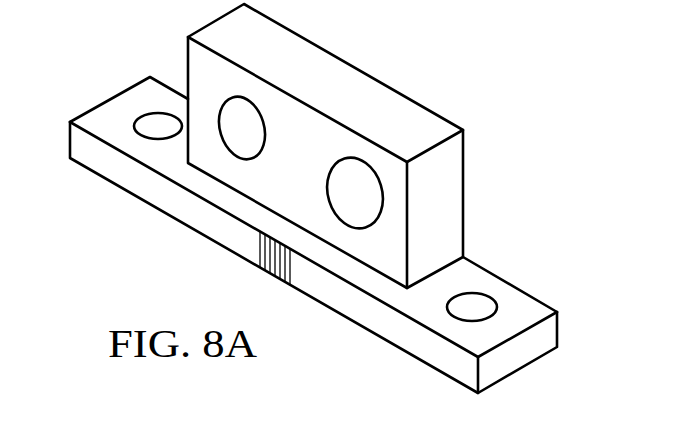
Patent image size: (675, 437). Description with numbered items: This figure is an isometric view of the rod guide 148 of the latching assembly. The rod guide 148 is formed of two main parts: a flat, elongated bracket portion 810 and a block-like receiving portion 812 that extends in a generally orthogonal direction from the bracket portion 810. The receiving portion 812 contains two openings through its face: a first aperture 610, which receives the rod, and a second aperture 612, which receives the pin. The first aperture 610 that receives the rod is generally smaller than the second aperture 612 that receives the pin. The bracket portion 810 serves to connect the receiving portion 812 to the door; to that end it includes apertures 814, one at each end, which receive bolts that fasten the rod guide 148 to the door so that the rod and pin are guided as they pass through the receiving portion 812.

The rod guide 148 is at (170, 252).
The bracket portion 810 is at (413, 345).
The receiving portion 812 is at (450, 192).
The apertures 814 is at (148, 135).
The first aperture 610 is at (245, 117).
The second aperture 612 is at (343, 178).